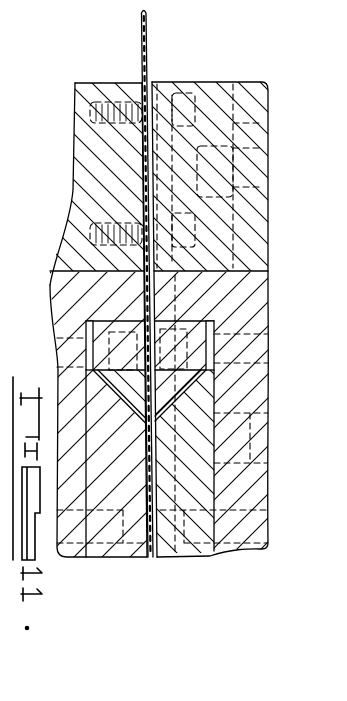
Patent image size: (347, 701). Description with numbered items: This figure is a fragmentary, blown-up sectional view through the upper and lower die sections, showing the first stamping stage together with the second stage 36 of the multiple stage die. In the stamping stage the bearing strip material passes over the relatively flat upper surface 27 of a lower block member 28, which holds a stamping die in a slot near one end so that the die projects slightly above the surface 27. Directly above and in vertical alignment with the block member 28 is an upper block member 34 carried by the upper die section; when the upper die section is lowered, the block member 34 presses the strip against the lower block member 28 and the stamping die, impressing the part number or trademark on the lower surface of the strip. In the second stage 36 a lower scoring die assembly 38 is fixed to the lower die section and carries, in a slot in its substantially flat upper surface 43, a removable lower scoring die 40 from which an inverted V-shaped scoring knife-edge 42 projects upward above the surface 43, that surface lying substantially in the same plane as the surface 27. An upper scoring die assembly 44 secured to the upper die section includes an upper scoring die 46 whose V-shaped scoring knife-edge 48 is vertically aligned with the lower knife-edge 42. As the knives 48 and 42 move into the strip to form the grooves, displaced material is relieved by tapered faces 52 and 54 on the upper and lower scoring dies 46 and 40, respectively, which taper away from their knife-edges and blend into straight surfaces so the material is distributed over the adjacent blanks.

The upper surface 27 is at (146, 163).
The lower block member 28 is at (117, 82).
The upper block member 34 is at (165, 82).
The second stage 36 is at (343, 55).
The lower scoring die assembly 38 is at (77, 561).
The lower scoring die 40 is at (116, 559).
The scoring knife-edge 42 is at (102, 463).
The upper surface 43 is at (146, 294).
The upper scoring die assembly 44 is at (271, 488).
The upper scoring die 46 is at (207, 547).
The scoring knife-edge 48 is at (172, 488).
The tapered face 52 is at (153, 559).
The tapered face 54 is at (178, 541).